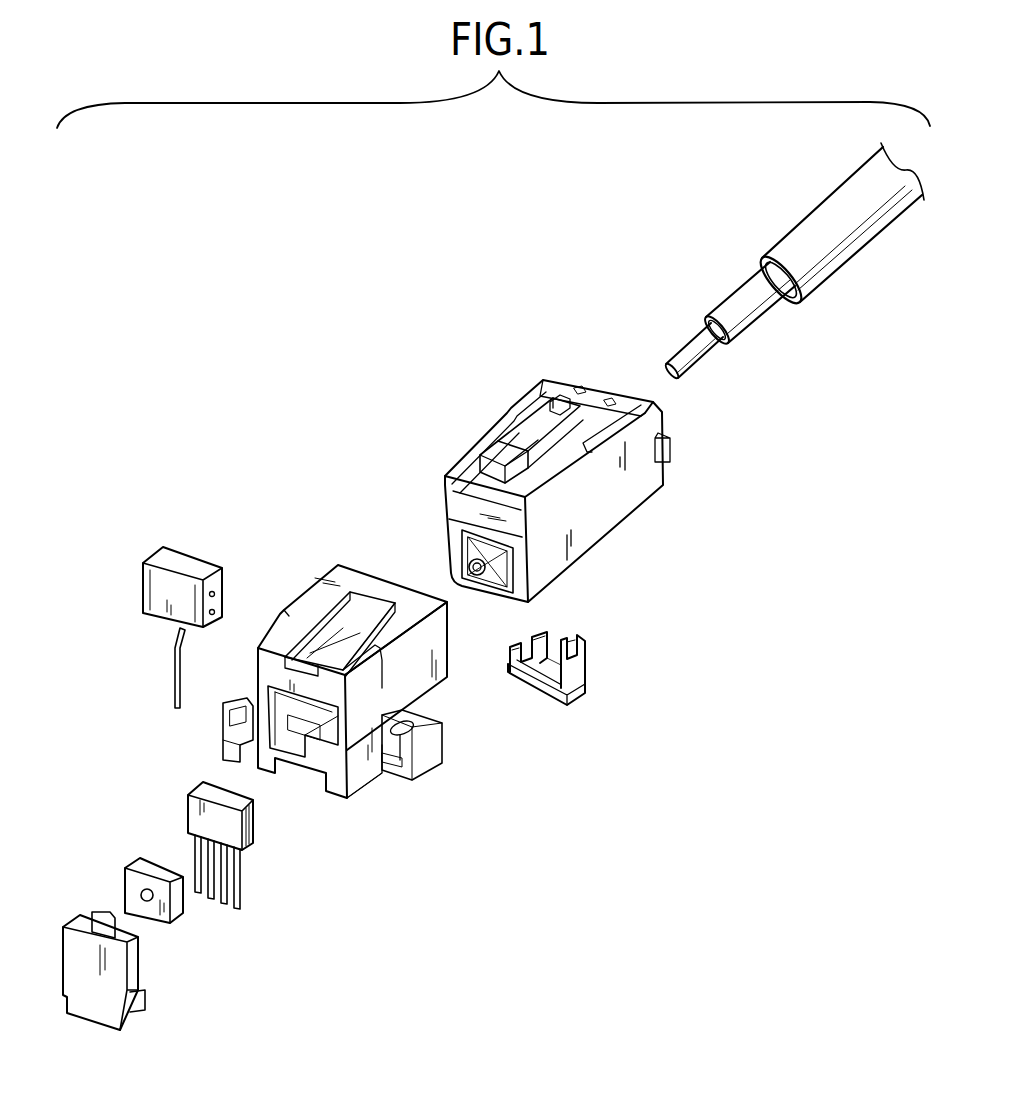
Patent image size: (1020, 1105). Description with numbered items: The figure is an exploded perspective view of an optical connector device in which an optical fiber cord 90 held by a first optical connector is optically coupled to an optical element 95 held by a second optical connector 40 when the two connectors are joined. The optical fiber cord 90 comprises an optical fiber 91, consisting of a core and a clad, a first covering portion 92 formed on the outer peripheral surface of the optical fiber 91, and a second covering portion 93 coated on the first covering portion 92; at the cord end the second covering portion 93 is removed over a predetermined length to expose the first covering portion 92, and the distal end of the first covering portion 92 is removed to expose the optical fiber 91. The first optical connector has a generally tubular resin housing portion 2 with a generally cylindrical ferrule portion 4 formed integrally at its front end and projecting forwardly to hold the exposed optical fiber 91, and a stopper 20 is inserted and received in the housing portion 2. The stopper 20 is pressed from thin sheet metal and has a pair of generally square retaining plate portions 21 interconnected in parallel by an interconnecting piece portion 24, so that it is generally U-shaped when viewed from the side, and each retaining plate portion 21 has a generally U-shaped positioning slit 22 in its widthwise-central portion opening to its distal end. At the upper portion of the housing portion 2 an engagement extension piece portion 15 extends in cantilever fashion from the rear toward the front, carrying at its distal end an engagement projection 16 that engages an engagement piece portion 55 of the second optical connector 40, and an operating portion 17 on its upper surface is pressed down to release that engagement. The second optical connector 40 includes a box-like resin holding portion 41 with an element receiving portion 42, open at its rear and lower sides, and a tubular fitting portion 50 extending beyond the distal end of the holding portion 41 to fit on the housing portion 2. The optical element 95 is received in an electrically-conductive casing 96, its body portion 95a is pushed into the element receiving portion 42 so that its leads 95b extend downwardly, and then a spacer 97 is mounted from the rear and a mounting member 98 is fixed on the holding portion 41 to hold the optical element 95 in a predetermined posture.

The housing portion 2 is at (557, 476).
The ferrule portion 4 is at (497, 587).
The engagement extension piece portion 15 is at (540, 443).
The engagement projection 16 is at (512, 457).
The operating portion 17 is at (558, 403).
The stopper 20 is at (573, 697).
The retaining plate portions 21 is at (560, 686).
The positioning slit 22 is at (561, 642).
The interconnecting piece portion 24 is at (569, 709).
The second optical connector 40 is at (360, 650).
The holding portion 41 is at (365, 777).
The element receiving portion 42 is at (293, 742).
The tubular fitting portion 50 is at (443, 705).
The engagement piece portion 55 is at (382, 588).
The optical fiber cord 90 is at (794, 291).
The optical fiber 91 is at (700, 363).
The first covering portion 92 is at (758, 323).
The second covering portion 93 is at (837, 270).
The optical element 95 is at (214, 834).
The body portion 95a is at (187, 803).
The leads 95b is at (193, 858).
The electrically-conductive casing 96 is at (187, 555).
The spacer 97 is at (178, 907).
The mounting member 98 is at (78, 950).